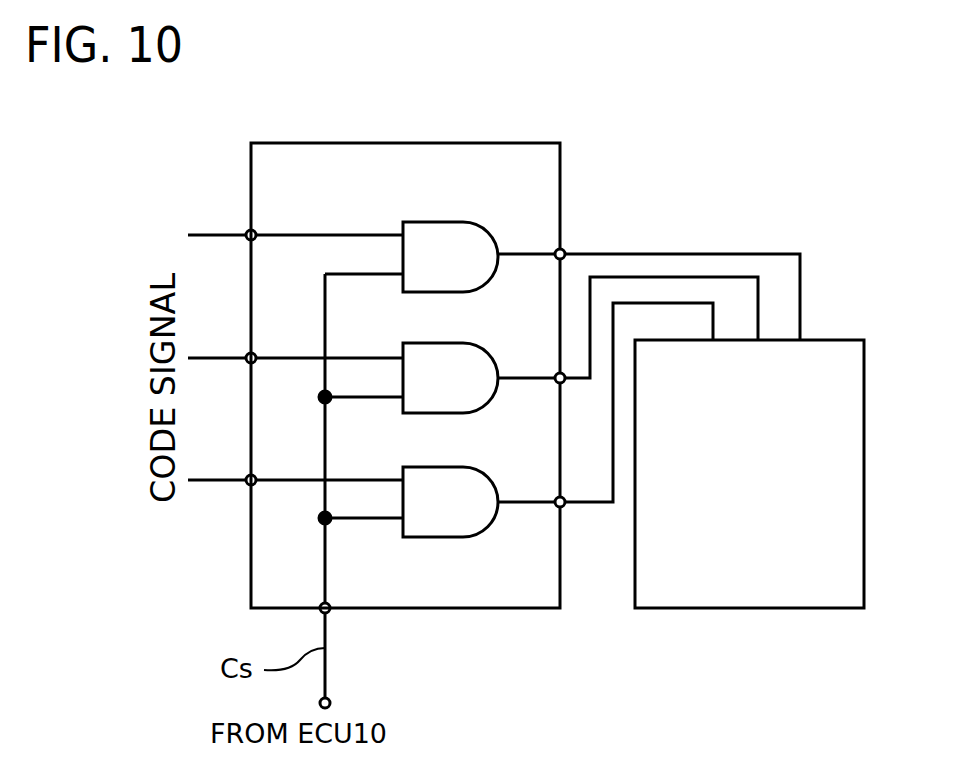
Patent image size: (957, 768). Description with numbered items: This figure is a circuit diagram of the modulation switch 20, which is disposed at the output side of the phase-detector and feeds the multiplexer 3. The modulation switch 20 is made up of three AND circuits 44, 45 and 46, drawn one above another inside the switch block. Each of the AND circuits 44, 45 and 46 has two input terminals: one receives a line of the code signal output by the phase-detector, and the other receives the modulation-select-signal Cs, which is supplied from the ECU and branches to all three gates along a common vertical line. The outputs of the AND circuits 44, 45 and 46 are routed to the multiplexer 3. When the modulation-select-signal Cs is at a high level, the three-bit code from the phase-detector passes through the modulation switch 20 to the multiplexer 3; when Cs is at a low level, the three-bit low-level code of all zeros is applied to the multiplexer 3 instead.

The modulation switch 20 is at (525, 422).
The AND circuit 44 is at (485, 227).
The AND circuit 45 is at (480, 348).
The AND circuit 46 is at (478, 470).
The multiplexer 3 is at (740, 608).